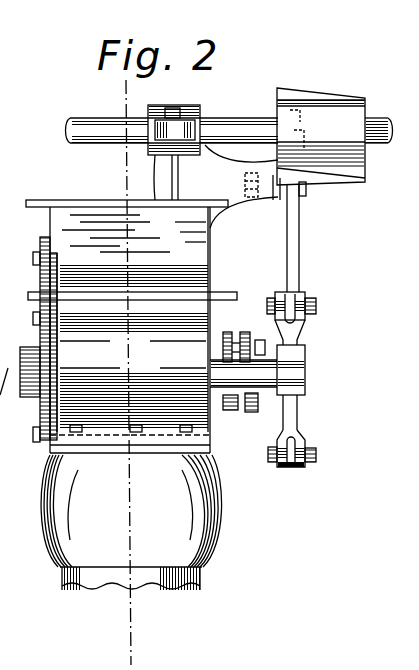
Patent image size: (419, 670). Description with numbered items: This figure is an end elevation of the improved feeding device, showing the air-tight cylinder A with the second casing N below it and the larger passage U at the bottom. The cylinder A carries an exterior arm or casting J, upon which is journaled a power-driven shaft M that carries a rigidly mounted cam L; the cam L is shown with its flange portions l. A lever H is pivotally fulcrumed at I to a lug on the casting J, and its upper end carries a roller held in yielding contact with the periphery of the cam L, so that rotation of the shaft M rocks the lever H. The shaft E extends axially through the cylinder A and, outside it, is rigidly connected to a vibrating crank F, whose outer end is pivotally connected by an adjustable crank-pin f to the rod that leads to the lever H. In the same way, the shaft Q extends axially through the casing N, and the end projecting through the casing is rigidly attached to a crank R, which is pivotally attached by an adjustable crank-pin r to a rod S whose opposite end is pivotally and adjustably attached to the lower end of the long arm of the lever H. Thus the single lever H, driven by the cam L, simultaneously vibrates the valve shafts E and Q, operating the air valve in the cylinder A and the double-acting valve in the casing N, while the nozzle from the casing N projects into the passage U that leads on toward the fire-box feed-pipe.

The air-tight cylinder A is at (210, 270).
The second casing N is at (150, 358).
The passage U is at (195, 578).
The shaft M is at (230, 123).
The arm or casting J is at (172, 177).
The cam L is at (340, 118).
The hub flange l is at (318, 98).
The lever H is at (306, 245).
The vibrating crank F is at (300, 331).
The adjustable crank-pin f is at (316, 305).
The shaft E is at (276, 356).
The shaft Q is at (270, 392).
The crank R is at (298, 417).
The rod S is at (292, 466).
The adjustable crank-pin r is at (316, 455).
The fulcrum I is at (134, 96).